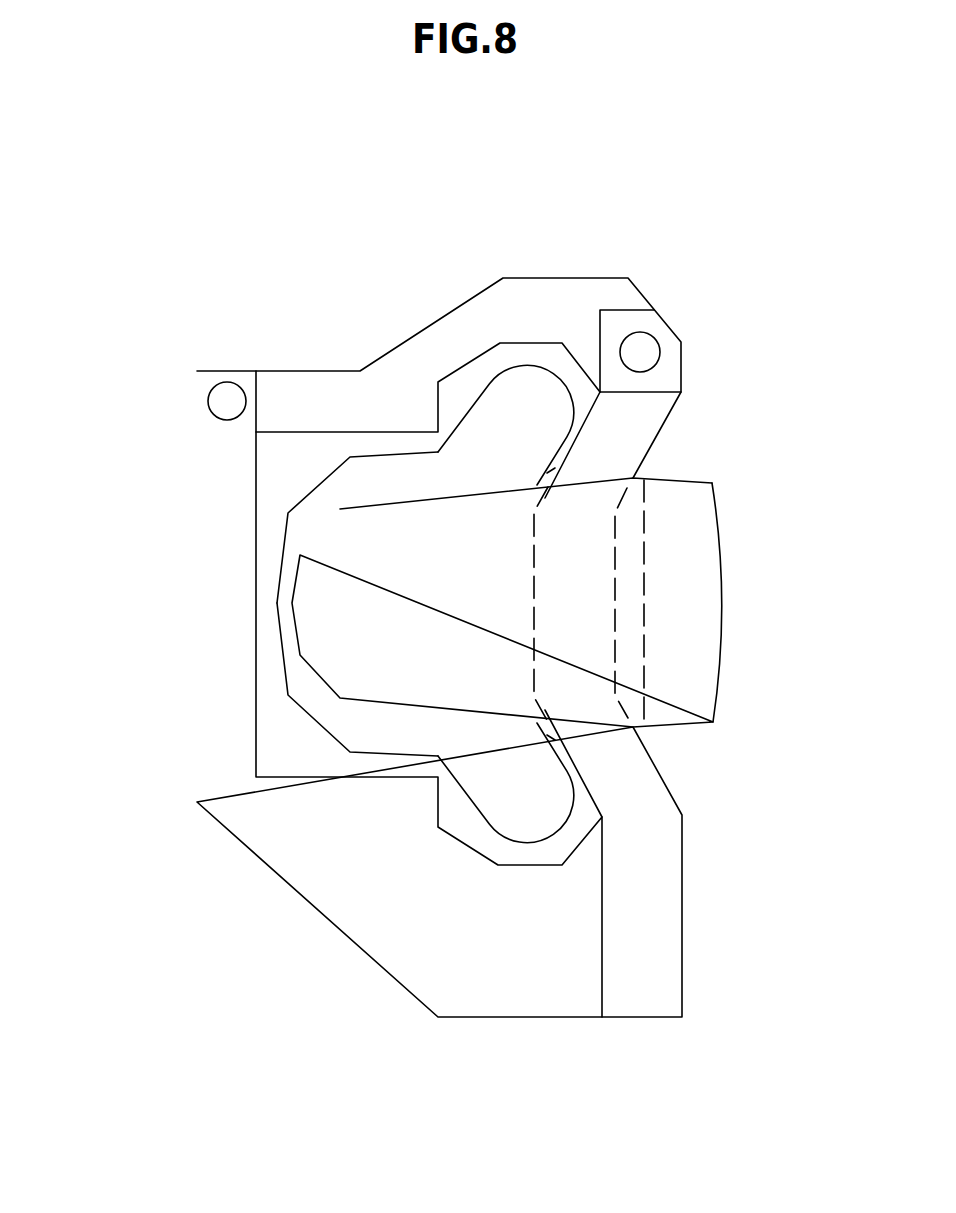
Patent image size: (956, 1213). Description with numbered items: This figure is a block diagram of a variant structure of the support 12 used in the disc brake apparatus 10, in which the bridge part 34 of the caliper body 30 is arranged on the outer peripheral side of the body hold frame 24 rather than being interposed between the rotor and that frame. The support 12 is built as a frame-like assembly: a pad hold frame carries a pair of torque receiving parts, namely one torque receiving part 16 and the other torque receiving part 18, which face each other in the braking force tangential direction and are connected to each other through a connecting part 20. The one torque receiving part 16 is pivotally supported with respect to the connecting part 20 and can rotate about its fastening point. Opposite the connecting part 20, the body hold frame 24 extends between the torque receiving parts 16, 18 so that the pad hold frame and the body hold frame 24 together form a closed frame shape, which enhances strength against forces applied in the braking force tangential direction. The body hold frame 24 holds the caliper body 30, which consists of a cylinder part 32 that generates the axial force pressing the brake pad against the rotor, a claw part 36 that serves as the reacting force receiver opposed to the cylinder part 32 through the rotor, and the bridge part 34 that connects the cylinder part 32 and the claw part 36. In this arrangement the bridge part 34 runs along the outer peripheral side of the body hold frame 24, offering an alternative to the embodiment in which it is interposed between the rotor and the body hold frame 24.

The disc brake apparatus 10 is at (668, 248).
The support 12 is at (172, 509).
The one torque receiving part 16 is at (430, 350).
The other torque receiving part 18 is at (420, 957).
The connecting part 20 is at (213, 592).
The body hold frame 24 is at (615, 558).
The caliper body 30 is at (710, 466).
The cylinder part 32 is at (382, 737).
The bridge part 34 is at (688, 627).
The claw part 36 is at (345, 628).